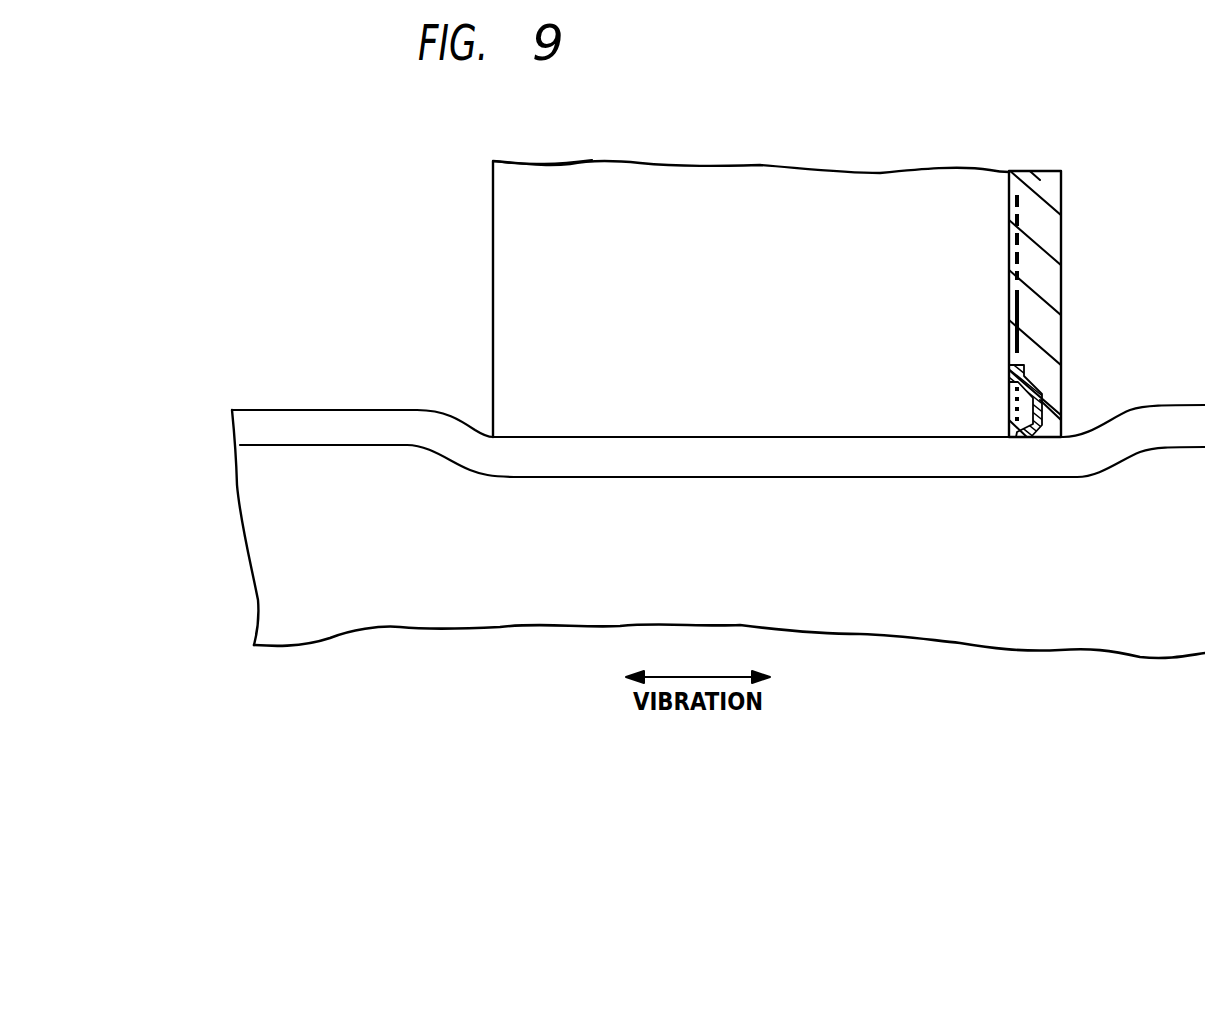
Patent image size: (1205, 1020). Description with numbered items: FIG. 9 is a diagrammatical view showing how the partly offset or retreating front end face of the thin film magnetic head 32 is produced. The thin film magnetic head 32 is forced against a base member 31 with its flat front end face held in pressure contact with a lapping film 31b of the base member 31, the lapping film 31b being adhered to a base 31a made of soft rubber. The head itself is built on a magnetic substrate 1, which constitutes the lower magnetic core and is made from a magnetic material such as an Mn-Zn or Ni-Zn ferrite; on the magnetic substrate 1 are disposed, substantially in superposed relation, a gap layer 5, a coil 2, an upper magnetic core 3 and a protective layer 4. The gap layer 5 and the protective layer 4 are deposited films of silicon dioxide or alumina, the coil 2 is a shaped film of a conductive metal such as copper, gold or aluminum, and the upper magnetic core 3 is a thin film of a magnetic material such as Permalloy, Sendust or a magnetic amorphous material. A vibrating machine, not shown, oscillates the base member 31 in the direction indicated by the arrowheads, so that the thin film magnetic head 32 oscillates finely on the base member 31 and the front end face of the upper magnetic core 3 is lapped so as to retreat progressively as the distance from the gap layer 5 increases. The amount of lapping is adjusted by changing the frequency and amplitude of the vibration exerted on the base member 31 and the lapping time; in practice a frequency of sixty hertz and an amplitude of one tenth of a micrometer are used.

The magnetic substrate 1 is at (902, 190).
The coil 2 is at (1020, 255).
The upper magnetic core 3 is at (1045, 398).
The protective layer 4 is at (1043, 332).
The gap layer 5 is at (1040, 432).
The base member 31 is at (233, 488).
The base 31a is at (292, 571).
The lapping film 31b is at (344, 424).
The thin film magnetic head 32 is at (598, 157).